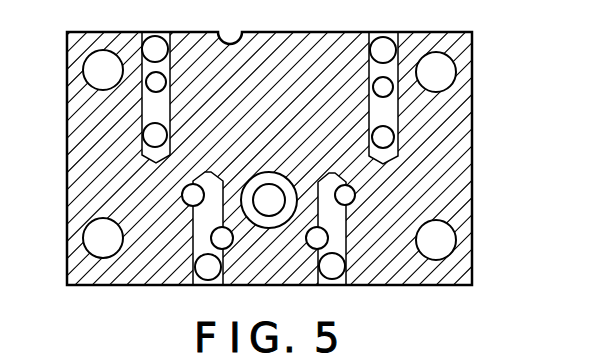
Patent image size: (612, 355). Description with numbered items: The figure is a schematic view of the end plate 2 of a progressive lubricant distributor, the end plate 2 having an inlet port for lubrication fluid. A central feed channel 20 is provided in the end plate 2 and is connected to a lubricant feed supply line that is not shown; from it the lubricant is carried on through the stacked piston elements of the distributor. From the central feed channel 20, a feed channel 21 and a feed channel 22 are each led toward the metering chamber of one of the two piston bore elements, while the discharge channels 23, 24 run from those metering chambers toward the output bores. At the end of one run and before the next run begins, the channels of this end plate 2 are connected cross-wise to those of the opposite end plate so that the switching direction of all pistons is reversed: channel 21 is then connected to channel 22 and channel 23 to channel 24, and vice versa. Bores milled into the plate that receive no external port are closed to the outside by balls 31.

The end plate 2 is at (472, 129).
The central feed channel 20 is at (269, 200).
The feed channel 21 is at (173, 110).
The feed channel 22 is at (377, 110).
The discharge channel 23 is at (222, 238).
The discharge channel 24 is at (318, 239).
The balls 31 is at (156, 40).